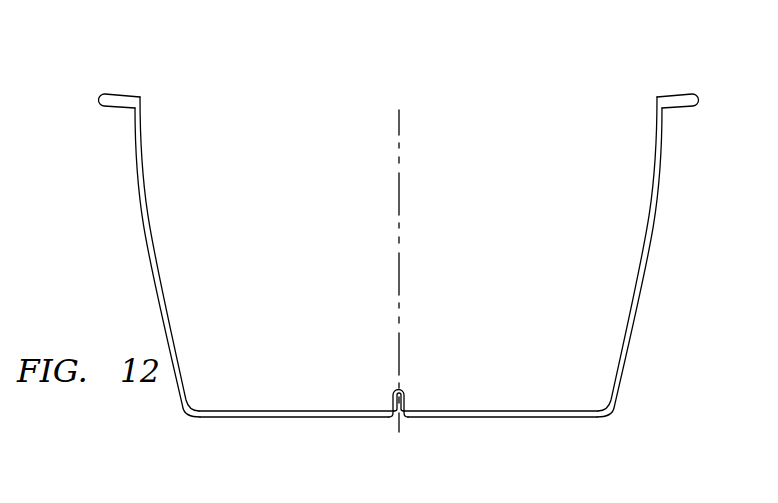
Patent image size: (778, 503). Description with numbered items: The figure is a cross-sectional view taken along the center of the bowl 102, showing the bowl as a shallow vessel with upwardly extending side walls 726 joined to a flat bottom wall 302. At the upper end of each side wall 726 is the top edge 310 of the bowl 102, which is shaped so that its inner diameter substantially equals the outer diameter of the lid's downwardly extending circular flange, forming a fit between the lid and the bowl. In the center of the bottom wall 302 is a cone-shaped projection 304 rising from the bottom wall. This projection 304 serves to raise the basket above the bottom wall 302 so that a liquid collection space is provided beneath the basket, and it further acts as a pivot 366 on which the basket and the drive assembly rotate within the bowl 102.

The bowl 102 is at (397, 233).
The top edge 310 is at (113, 102).
The side walls 726 is at (146, 224).
The bottom wall 302 is at (507, 412).
The pivot 366 is at (393, 392).
The cone-shaped projection 304 is at (398, 418).